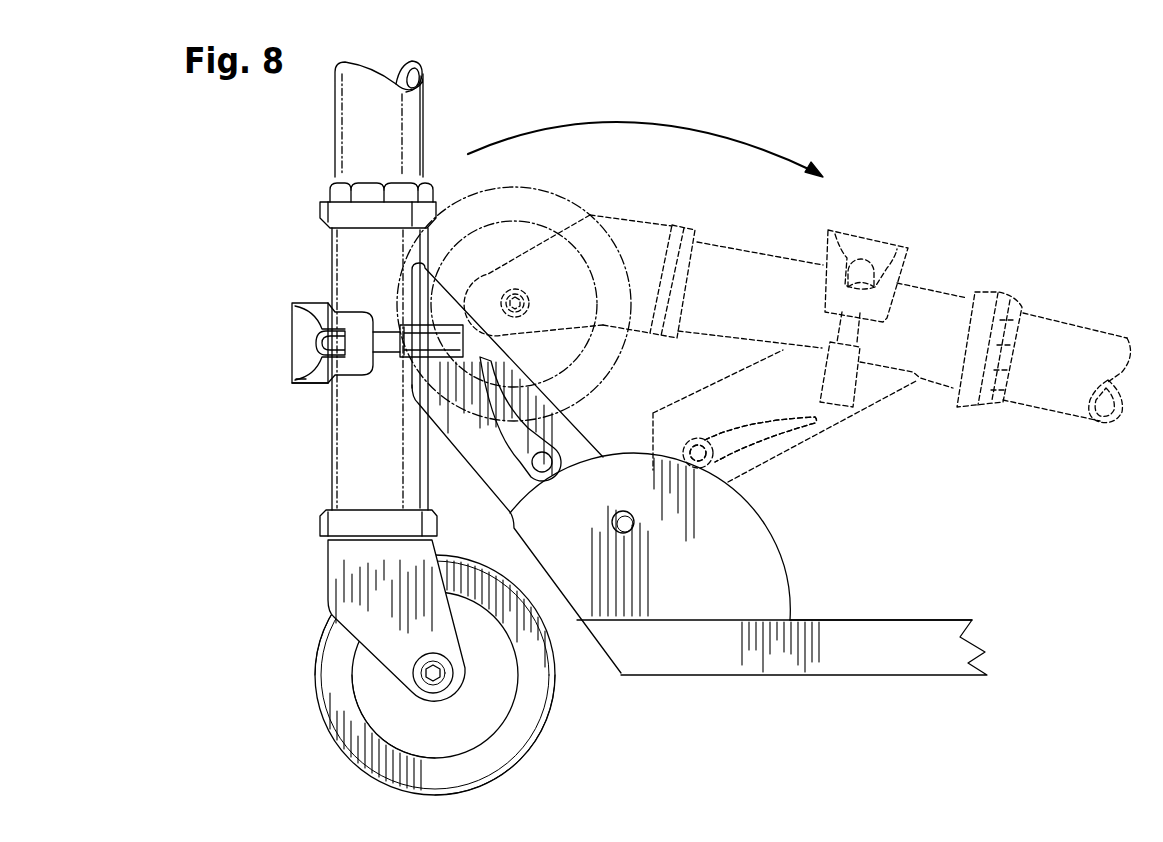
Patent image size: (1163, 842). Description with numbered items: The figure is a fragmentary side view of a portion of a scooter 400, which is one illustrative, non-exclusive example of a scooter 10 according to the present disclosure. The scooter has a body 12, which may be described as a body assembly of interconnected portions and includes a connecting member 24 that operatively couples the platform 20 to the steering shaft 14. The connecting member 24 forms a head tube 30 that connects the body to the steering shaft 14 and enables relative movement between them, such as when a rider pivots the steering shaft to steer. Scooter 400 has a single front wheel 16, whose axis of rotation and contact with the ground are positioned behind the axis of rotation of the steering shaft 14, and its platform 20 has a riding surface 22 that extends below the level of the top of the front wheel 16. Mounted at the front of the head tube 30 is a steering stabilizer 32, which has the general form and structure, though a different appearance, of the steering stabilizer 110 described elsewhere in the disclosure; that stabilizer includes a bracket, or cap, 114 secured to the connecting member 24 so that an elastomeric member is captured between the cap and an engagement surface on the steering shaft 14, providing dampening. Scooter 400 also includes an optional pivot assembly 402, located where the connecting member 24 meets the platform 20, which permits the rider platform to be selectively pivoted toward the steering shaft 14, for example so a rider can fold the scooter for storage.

The scooter 10 is at (1092, 137).
The body 12 is at (849, 556).
The steering shaft 14 is at (336, 154).
The front wheel 16 is at (320, 725).
The platform 20 is at (844, 619).
The riding surface 22 is at (900, 618).
The connecting member 24 is at (585, 443).
The head tube 30 is at (332, 270).
The steering stabilizer 32 is at (339, 365).
The steering stabilizer 110 is at (291, 349).
The cap 114 is at (292, 372).
The scooter 400 is at (1024, 187).
The pivot assembly 402 is at (766, 531).